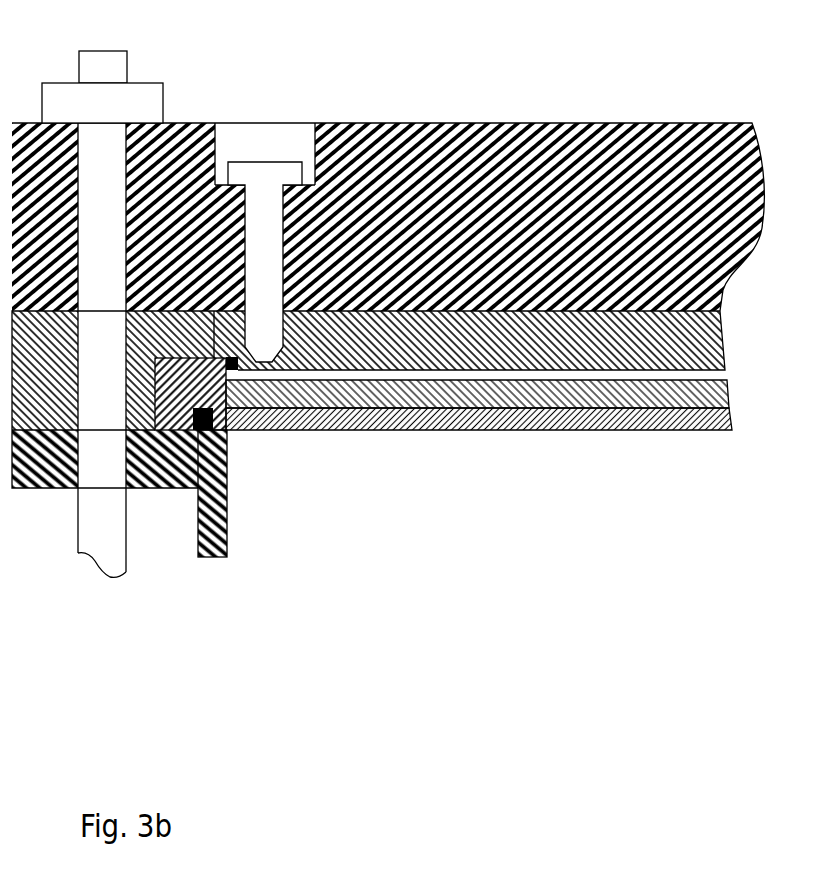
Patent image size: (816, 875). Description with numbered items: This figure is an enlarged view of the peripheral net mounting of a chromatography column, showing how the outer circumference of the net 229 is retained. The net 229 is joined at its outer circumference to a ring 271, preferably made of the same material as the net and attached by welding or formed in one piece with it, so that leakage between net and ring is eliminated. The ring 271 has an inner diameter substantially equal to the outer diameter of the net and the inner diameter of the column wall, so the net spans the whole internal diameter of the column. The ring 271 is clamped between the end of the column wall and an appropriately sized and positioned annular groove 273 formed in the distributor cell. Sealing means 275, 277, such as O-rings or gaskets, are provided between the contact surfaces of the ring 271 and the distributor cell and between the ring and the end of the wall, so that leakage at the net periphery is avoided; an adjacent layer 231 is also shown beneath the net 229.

The net 229 is at (455, 393).
The second layer 231 is at (513, 420).
The ring 271 is at (227, 430).
The annular groove 273 is at (210, 345).
The sealing means 275 is at (237, 371).
The sealing means 277 is at (227, 453).